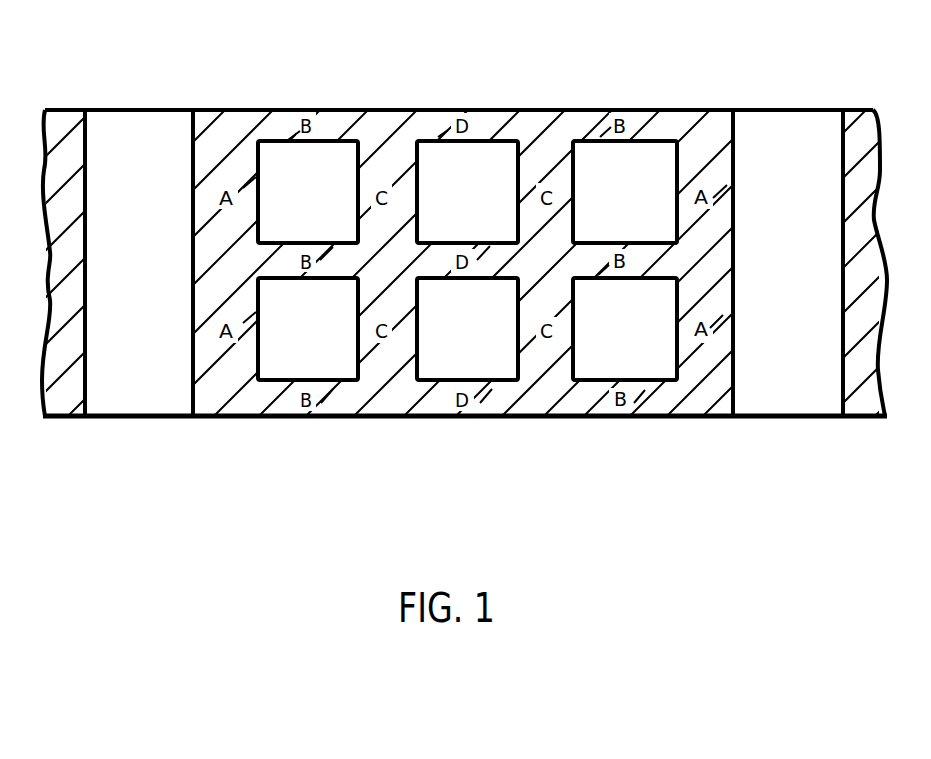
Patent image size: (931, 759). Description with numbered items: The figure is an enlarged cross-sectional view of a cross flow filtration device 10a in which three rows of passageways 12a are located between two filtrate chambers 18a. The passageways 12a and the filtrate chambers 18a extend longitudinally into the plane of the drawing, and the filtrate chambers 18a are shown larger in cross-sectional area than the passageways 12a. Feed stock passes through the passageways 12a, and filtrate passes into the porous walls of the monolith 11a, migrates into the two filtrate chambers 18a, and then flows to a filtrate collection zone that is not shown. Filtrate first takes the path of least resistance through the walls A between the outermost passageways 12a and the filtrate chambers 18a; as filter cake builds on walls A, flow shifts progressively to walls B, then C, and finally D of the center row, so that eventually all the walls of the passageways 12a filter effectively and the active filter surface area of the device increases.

The cross flow filtration device 10a is at (470, 87).
The monolith 11a is at (280, 110).
The passageways 12a is at (645, 348).
The filtrate chambers 18a is at (162, 262).